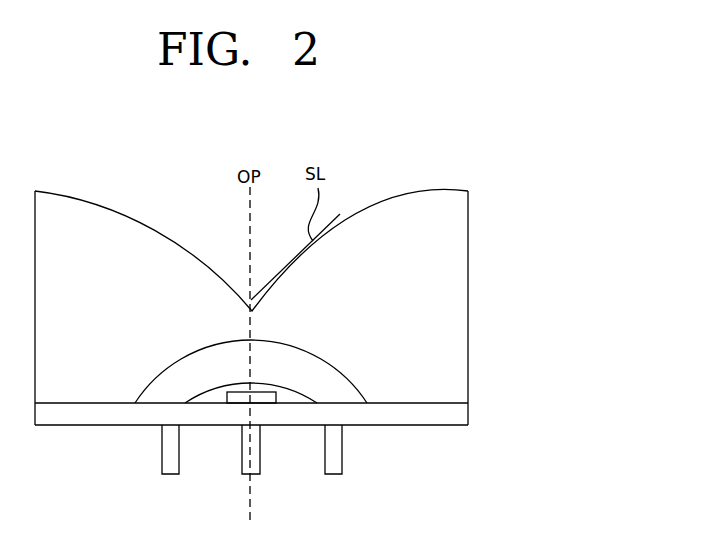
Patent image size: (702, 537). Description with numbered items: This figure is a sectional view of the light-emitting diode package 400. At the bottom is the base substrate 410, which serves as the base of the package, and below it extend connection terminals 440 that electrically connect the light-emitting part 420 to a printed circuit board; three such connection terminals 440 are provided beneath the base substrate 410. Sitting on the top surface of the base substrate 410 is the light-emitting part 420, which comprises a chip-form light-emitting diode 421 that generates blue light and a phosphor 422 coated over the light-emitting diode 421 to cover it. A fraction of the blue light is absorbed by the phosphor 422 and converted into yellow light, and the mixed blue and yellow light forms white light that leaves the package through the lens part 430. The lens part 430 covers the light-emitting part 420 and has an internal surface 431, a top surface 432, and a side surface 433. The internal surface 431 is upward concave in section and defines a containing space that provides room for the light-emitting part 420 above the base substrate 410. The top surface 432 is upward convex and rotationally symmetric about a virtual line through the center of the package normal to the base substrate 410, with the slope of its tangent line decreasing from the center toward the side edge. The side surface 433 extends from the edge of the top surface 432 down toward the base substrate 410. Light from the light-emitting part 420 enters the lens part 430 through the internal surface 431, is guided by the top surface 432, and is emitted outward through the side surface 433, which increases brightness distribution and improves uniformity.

The light-emitting diode package 400 is at (510, 138).
The base substrate 410 is at (447, 417).
The light-emitting part 420 is at (222, 325).
The light-emitting diode 421 is at (233, 390).
The phosphor 422 is at (215, 400).
The lens part 430 is at (321, 296).
The internal surface 431 is at (337, 367).
The top surface 432 is at (413, 199).
The side surface 433 is at (468, 302).
The connection terminal 440 is at (333, 474).